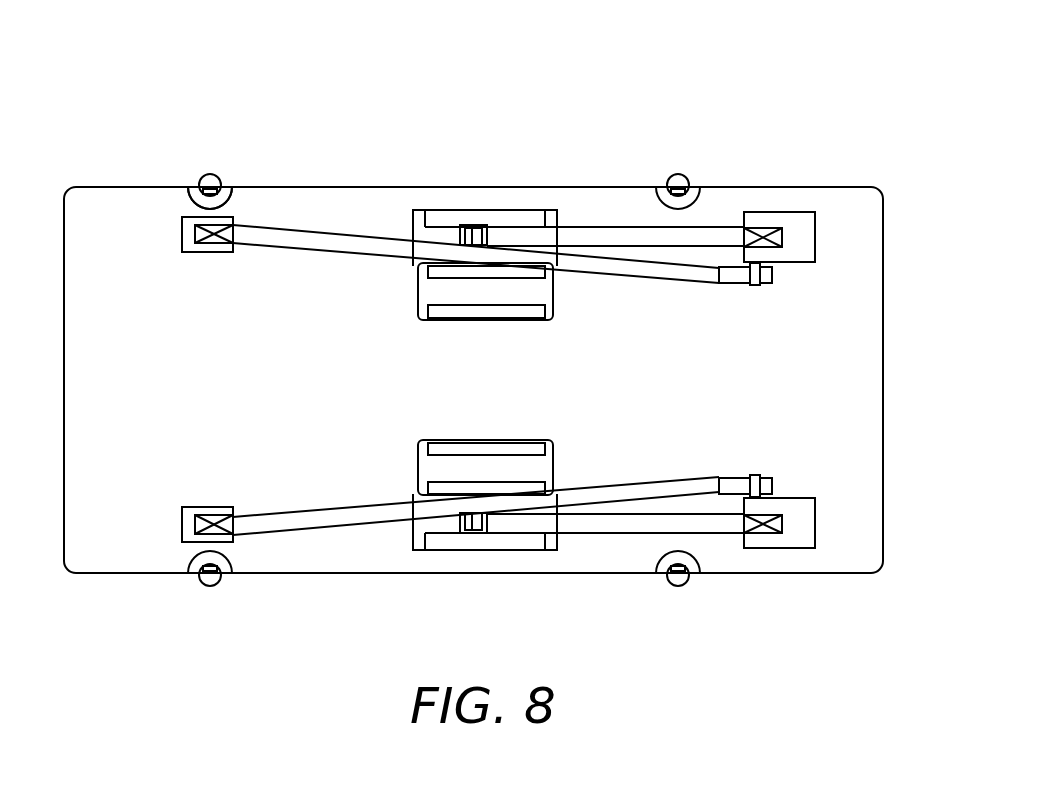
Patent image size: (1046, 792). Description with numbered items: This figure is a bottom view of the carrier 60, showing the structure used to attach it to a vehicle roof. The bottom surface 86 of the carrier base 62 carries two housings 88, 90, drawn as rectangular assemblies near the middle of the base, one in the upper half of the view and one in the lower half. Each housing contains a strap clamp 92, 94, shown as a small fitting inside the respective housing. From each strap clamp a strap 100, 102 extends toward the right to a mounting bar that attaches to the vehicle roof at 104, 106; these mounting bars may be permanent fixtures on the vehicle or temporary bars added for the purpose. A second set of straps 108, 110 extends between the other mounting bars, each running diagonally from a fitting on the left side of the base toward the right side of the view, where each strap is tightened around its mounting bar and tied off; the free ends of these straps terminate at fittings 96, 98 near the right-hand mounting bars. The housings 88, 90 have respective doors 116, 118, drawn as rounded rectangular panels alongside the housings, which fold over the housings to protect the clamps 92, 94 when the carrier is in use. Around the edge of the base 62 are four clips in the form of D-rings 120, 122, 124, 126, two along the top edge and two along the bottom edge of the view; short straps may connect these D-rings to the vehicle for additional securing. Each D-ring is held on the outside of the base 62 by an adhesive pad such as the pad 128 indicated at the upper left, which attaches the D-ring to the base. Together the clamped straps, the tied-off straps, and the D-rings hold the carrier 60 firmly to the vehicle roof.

The carrier 60 is at (353, 132).
The carrier base 62 is at (325, 573).
The bottom surface 86 is at (855, 393).
The housing 88 is at (412, 266).
The housing 90 is at (412, 492).
The strap clamp 92 is at (473, 232).
The strap clamp 94 is at (473, 528).
The first strap end 96 is at (752, 286).
The second strap end 98 is at (752, 474).
The strap 100 is at (720, 226).
The strap 102 is at (720, 532).
The mounting bar attachment 104 is at (800, 235).
The mounting bar attachment 106 is at (815, 522).
The strap 108 is at (283, 247).
The strap 110 is at (262, 512).
The door 116 is at (553, 300).
The door 118 is at (553, 462).
The D-ring 120 is at (210, 586).
The D-ring 122 is at (678, 586).
The D-ring 124 is at (678, 175).
The D-ring 126 is at (210, 175).
The adhesive pad 128 is at (192, 203).